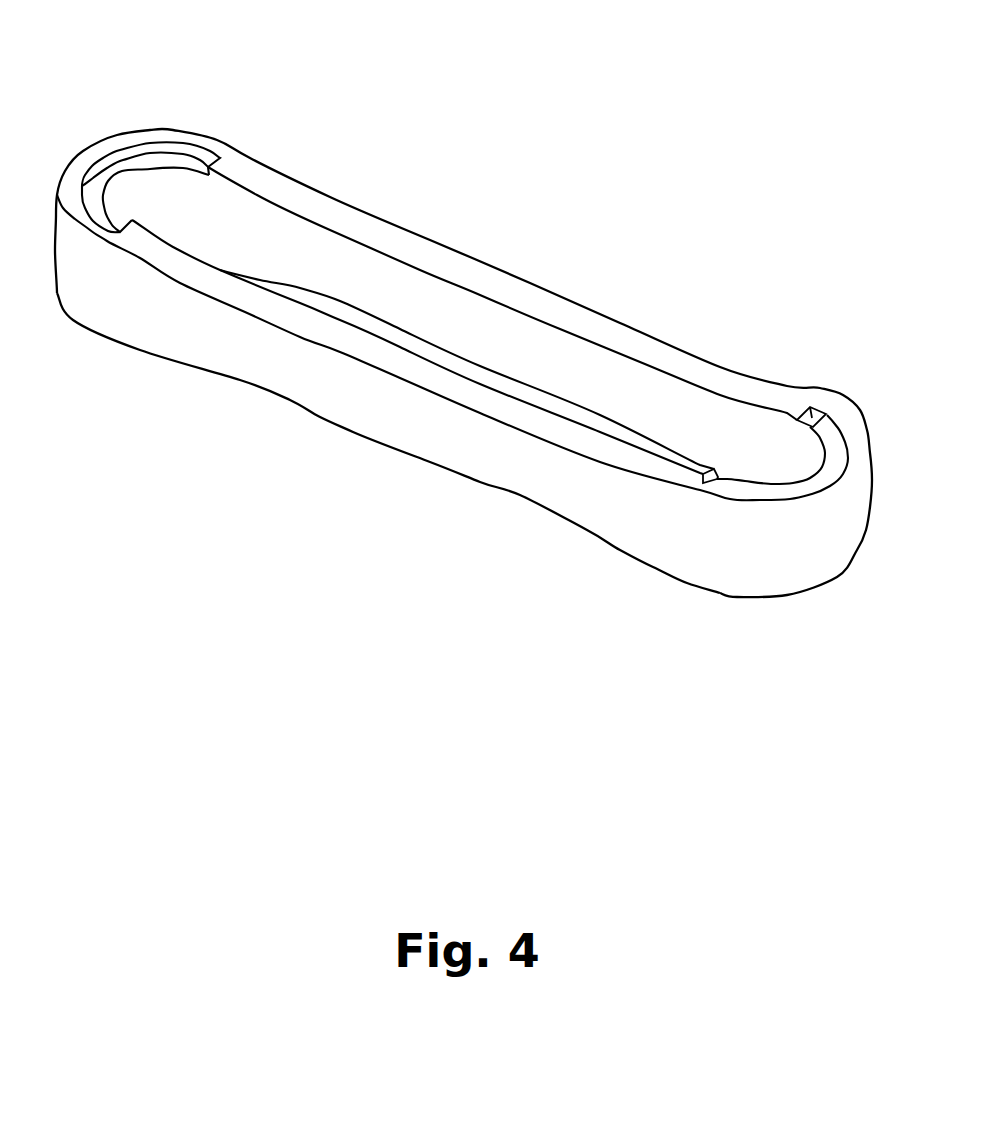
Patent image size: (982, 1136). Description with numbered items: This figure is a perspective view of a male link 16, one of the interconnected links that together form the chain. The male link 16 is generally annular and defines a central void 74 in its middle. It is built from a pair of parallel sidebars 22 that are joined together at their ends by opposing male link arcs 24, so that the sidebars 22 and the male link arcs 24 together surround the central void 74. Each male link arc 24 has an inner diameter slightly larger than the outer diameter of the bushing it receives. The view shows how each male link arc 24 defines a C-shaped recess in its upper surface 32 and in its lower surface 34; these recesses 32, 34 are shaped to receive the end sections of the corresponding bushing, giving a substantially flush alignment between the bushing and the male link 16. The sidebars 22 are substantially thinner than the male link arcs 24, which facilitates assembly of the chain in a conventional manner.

The male link 16 is at (400, 191).
The sidebars 22 is at (340, 275).
The male link arcs 24 is at (858, 521).
The upper surface recess 32 is at (825, 433).
The lower surface recess 34 is at (723, 600).
The central void 74 is at (523, 360).